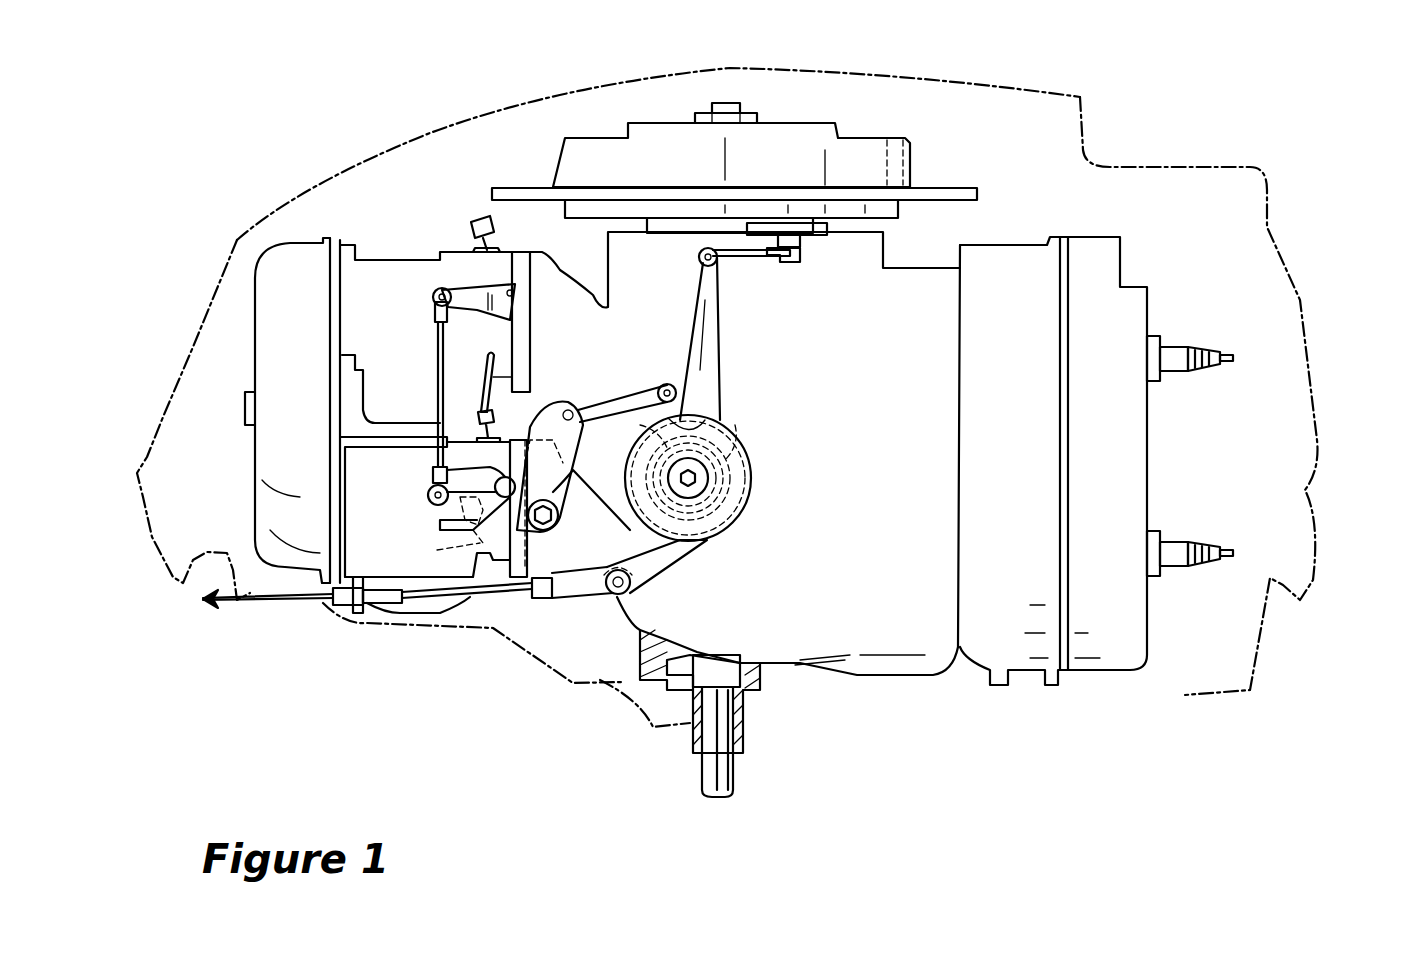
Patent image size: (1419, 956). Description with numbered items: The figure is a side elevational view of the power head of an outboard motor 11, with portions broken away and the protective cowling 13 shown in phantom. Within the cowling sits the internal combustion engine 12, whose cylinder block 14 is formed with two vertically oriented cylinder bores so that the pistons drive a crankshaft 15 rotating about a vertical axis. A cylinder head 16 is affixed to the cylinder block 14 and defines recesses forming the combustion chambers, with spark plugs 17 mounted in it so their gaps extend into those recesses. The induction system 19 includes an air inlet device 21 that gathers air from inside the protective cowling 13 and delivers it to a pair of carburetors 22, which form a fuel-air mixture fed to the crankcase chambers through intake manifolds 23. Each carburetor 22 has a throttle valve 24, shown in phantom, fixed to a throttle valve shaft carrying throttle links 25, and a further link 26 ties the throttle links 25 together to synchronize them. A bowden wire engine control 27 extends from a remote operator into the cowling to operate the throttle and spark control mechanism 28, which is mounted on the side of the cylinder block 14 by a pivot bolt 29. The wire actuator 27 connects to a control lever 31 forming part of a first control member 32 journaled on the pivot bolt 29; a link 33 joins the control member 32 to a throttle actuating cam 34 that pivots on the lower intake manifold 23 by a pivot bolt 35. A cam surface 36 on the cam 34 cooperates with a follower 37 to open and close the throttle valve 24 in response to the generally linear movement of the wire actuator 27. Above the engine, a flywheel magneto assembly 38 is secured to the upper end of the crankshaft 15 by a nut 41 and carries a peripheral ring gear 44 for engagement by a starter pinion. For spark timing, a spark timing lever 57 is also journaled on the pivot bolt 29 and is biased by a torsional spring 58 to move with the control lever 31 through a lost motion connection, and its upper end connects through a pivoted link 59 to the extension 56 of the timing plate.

The outboard motor 11 is at (1168, 104).
The internal combustion engine 12 is at (935, 246).
The protective cowling 13 is at (1315, 298).
The cylinder block 14 is at (877, 643).
The crankshaft 15 is at (747, 723).
The cylinder head 16 is at (1040, 243).
The spark plugs 17 is at (1197, 340).
The induction system 19 is at (355, 197).
The air inlet device 21 is at (240, 357).
The carburetors 22 is at (398, 257).
The intake manifolds 23 is at (557, 267).
The throttle valve 24 is at (460, 537).
The throttle links 25 is at (442, 270).
The link 26 is at (437, 377).
The bowden wire engine control 27 is at (487, 597).
The throttle and spark control mechanism 28 is at (777, 428).
The pivot bolt 29 is at (693, 492).
The control lever 31 is at (647, 580).
The first control member 32 is at (700, 540).
The link 33 is at (602, 397).
The throttle actuating cam 34 is at (560, 524).
The pivot bolt 35 is at (545, 530).
The cam surface 36 is at (530, 427).
The follower 37 is at (430, 493).
The flywheel magneto assembly 38 is at (872, 131).
The nut 41 is at (698, 110).
The peripheral ring gear 44 is at (947, 190).
The extension 56 is at (817, 237).
The spark timing lever 57 is at (713, 345).
The torsional spring 58 is at (723, 482).
The pivoted link 59 is at (737, 260).